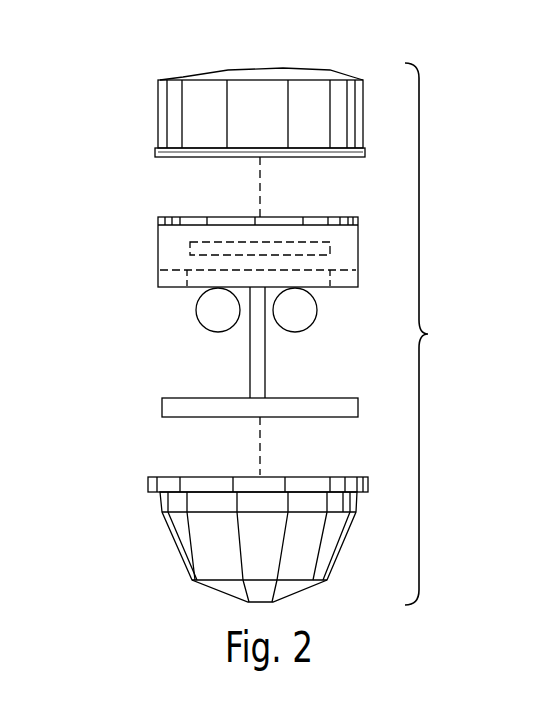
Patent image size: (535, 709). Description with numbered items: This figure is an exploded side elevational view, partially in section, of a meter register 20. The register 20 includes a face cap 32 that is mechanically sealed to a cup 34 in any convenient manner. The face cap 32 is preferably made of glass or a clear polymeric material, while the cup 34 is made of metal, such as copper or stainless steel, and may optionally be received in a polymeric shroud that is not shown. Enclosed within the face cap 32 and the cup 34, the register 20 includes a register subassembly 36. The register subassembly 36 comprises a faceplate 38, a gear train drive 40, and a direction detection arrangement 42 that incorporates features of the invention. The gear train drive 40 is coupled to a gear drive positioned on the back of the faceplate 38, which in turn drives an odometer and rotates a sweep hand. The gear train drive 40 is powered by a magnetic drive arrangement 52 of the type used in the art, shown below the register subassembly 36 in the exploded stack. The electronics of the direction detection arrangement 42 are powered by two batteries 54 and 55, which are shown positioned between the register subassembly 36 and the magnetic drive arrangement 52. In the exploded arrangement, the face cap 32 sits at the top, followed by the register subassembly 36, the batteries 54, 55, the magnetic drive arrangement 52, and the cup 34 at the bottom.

The register 20 is at (436, 334).
The face cap 32 is at (180, 78).
The cup 34 is at (207, 583).
The register subassembly 36 is at (112, 211).
The faceplate 38 is at (188, 217).
The gear train drive 40 is at (357, 279).
The direction detection arrangement 42 is at (179, 254).
The magnetic drive arrangement 52 is at (144, 423).
The battery 54 is at (204, 326).
The battery 55 is at (312, 321).